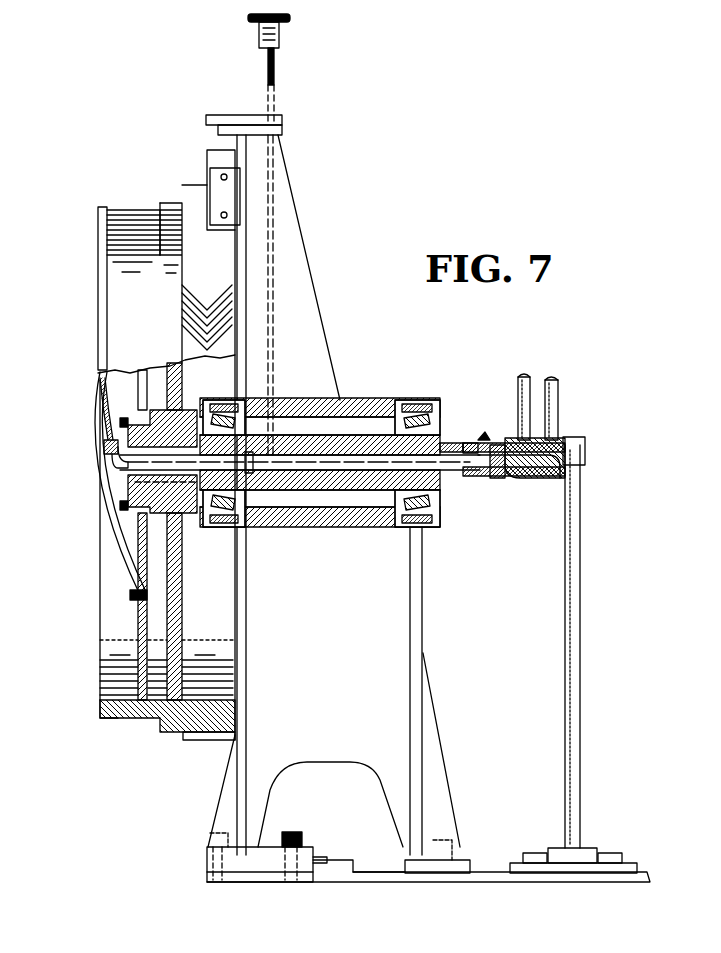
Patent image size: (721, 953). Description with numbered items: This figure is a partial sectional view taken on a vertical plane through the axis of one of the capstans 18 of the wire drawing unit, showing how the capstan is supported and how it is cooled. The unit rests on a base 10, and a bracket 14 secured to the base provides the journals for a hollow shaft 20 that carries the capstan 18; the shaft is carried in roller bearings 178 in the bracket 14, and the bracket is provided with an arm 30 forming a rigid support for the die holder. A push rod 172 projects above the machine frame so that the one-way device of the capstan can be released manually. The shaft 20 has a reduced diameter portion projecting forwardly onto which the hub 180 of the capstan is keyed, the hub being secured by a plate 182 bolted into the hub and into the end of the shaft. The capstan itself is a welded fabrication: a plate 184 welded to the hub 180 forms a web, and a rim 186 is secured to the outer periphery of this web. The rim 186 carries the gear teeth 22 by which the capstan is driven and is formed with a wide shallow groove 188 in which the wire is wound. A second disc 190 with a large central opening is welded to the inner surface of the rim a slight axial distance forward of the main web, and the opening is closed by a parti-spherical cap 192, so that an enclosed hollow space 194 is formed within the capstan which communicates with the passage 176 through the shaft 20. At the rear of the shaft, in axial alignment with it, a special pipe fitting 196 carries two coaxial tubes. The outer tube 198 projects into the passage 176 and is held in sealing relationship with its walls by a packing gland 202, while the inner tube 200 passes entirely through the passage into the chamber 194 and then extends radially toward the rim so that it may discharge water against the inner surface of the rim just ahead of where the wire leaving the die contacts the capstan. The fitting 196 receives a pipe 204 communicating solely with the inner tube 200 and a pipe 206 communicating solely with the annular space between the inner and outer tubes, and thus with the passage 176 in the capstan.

The base 10 is at (497, 878).
The bracket 14 is at (400, 607).
The capstan 18 is at (128, 222).
The shaft 20 is at (328, 440).
The gear teeth 22 is at (200, 736).
The arm 30 is at (292, 220).
The push rod 172 is at (276, 68).
The passage 176 is at (300, 456).
The roller bearing 178 is at (223, 523).
The hub 180 is at (152, 520).
The plate 182 is at (128, 482).
The plate 184 is at (170, 622).
The rim 186 is at (152, 708).
The groove 188 is at (118, 717).
The disc 190 is at (140, 658).
The parti-spherical cap 192 is at (97, 440).
The hollow space 194 is at (143, 563).
The pipe fitting 196 is at (547, 477).
The outer tube 198 is at (486, 473).
The inner tube 200 is at (112, 380).
The packing gland 202 is at (470, 447).
The pipe 204 is at (558, 410).
The pipe 206 is at (530, 383).